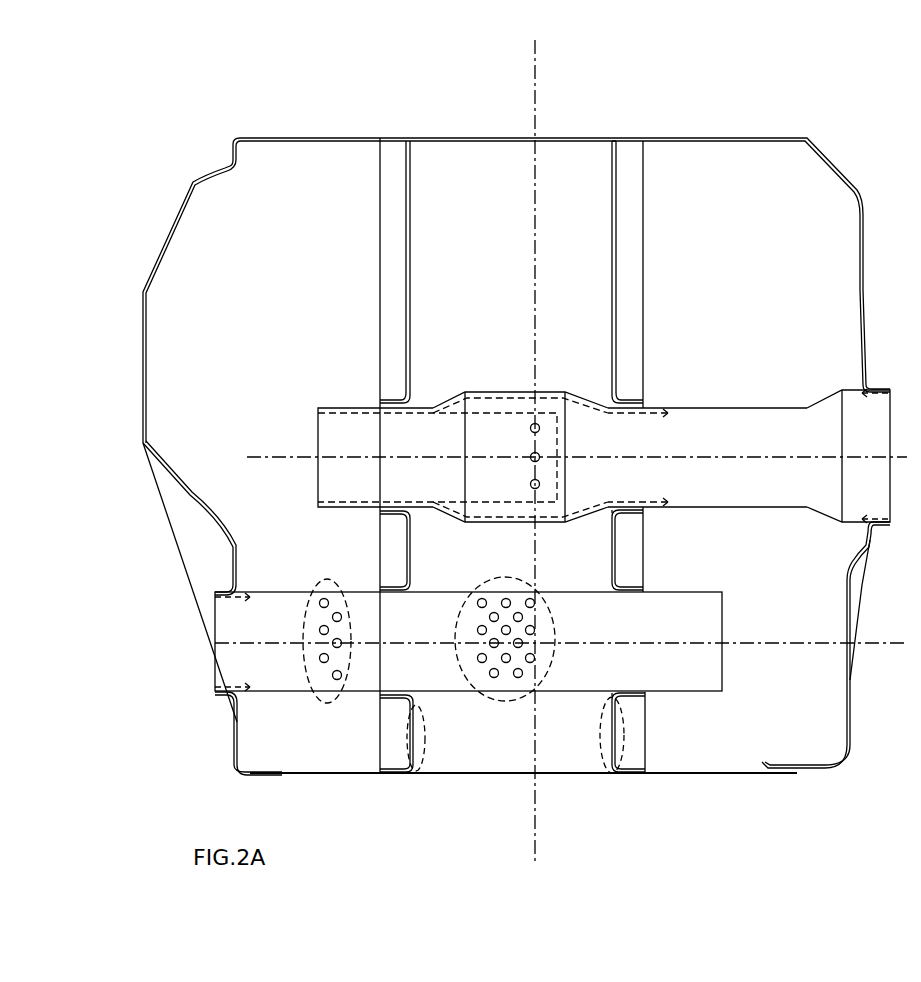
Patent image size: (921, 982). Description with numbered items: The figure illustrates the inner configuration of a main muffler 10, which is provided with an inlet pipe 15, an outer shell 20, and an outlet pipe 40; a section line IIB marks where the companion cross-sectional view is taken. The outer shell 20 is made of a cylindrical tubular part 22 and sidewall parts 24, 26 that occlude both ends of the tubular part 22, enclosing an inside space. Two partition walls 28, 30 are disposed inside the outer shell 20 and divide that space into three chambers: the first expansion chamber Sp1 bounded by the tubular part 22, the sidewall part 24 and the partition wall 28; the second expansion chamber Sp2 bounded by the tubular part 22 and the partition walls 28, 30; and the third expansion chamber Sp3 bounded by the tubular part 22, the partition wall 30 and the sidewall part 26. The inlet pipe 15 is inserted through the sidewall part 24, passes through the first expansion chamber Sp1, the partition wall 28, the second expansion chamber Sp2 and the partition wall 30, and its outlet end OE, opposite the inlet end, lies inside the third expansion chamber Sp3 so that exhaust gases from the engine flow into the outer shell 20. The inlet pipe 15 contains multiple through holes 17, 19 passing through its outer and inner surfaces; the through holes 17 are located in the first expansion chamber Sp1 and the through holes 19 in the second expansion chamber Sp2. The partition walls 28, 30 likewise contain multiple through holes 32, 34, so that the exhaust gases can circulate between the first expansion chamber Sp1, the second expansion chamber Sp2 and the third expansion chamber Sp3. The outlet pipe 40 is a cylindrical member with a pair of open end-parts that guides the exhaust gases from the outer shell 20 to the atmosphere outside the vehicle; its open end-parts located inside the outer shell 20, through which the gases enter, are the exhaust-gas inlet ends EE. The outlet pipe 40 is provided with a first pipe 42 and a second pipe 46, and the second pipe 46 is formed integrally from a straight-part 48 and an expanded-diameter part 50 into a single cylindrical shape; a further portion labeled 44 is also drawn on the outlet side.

The main muffler 10 is at (806, 114).
The inlet pipe 15 is at (230, 670).
The through holes 17 is at (342, 692).
The through holes 19 is at (473, 688).
The outer shell 20 is at (809, 790).
The tubular part 22 is at (705, 776).
The sidewall part 24 is at (192, 497).
The sidewall part 26 is at (838, 157).
The partition wall 28 is at (387, 753).
The partition wall 30 is at (632, 757).
The through holes 32 is at (420, 770).
The through holes 34 is at (601, 772).
The outlet pipe 40 is at (470, 362).
The first pipe 42 is at (348, 405).
The outlet pipe 44 is at (864, 408).
The second pipe 46 is at (690, 93).
The straight-part 48 is at (705, 405).
The expanded-diameter part 50 is at (545, 392).
The exhaust-gas inlet ends EE is at (279, 775).
The outlet end OE is at (762, 142).
The first expansion chamber Sp1 is at (195, 240).
The second expansion chamber Sp2 is at (490, 204).
The third expansion chamber Sp3 is at (743, 225).
The IIB-IIB section line IIB is at (540, 49).